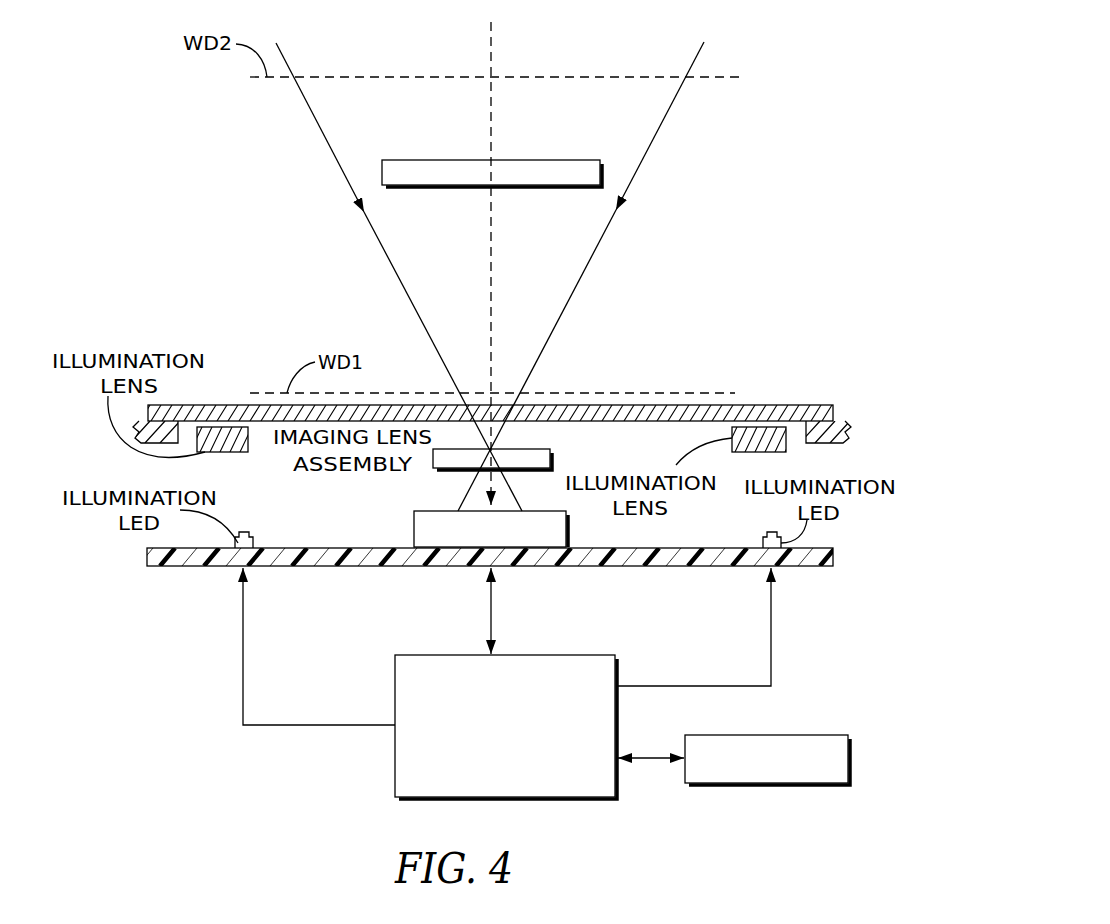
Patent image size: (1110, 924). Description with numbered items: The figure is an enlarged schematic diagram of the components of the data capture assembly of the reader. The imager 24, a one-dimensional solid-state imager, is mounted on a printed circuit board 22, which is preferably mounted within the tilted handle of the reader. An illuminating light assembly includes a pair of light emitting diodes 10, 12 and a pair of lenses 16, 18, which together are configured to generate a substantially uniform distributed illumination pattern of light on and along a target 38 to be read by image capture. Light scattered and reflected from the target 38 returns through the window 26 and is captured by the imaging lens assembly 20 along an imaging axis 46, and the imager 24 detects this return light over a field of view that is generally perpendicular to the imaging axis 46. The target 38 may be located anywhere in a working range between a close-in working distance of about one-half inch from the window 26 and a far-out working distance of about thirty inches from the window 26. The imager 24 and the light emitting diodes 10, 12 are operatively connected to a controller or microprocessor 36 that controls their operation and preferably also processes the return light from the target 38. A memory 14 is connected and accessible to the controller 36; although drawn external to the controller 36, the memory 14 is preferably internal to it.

The light emitting diode 10 is at (763, 540).
The light emitting diode 12 is at (248, 535).
The memory 14 is at (700, 735).
The lens 16 is at (787, 440).
The lens 18 is at (222, 452).
The imaging lens assembly 20 is at (553, 459).
The printed circuit board 22 is at (630, 567).
The imager 24 is at (458, 471).
The window 26 is at (224, 405).
The controller 36 is at (430, 655).
The target 38 is at (548, 160).
The imaging axis 46 is at (492, 38).